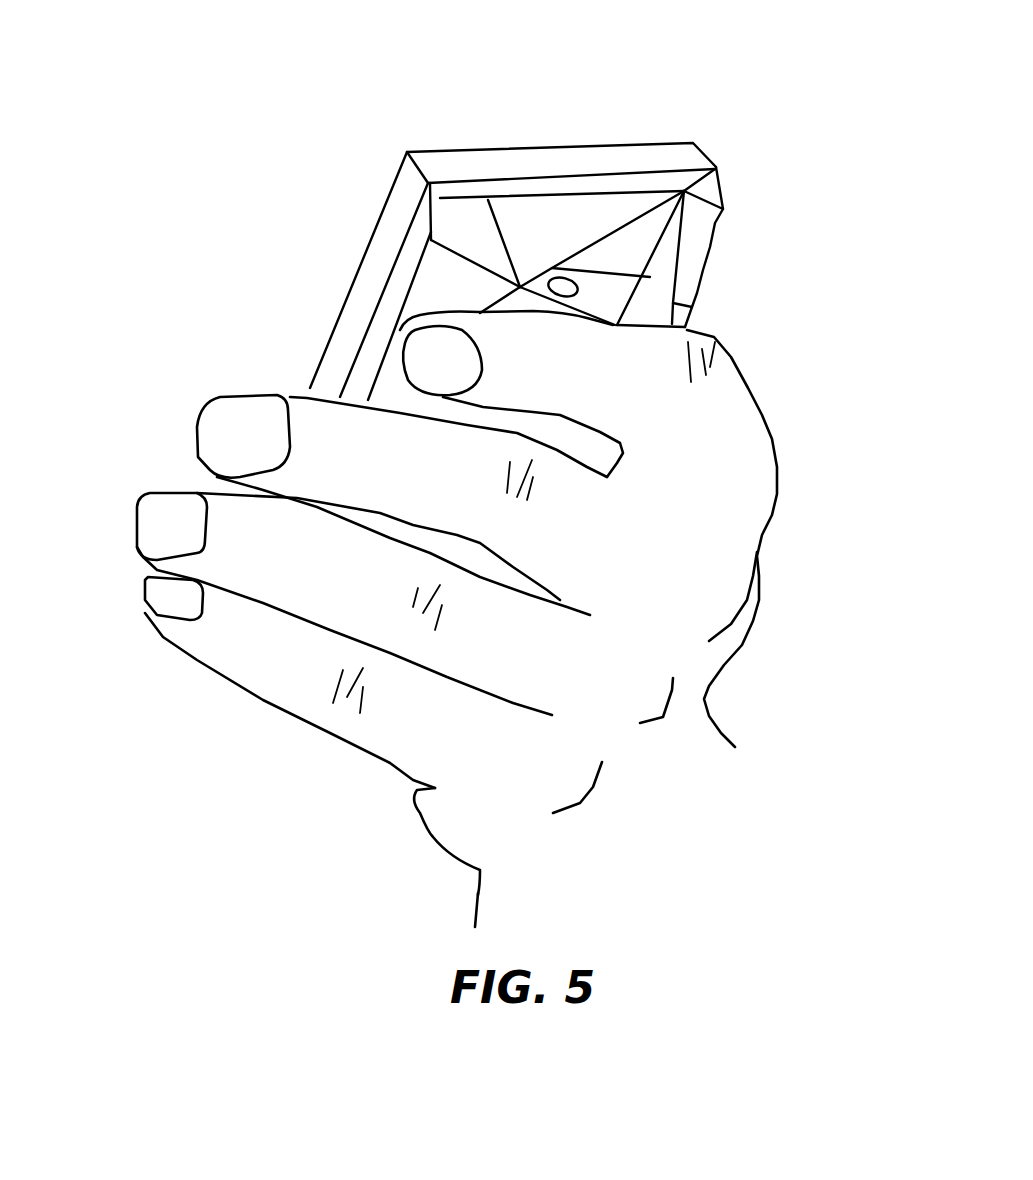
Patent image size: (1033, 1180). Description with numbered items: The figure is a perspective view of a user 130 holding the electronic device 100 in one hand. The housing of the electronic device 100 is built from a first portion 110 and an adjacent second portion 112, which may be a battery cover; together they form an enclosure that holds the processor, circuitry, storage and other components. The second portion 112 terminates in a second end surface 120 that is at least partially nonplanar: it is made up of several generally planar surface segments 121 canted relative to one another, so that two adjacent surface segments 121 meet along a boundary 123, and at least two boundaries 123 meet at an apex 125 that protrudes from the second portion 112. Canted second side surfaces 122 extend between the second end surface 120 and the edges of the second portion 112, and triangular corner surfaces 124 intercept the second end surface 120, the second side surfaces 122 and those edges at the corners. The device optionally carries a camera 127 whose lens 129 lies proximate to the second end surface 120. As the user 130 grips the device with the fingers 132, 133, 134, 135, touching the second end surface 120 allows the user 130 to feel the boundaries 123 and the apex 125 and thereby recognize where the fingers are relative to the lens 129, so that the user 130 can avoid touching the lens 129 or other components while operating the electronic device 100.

The electronic device 100 is at (766, 90).
The first portion 110 is at (360, 217).
The second portion 112 is at (717, 272).
The second end surface 120 is at (580, 208).
The surface segments 121 is at (541, 278).
The second side surfaces 122 is at (510, 191).
The boundary 123 is at (692, 307).
The corner surface 124 is at (448, 203).
The apex 125 is at (520, 287).
The camera 127 is at (592, 272).
The lens 129 is at (578, 289).
The user 130 is at (772, 676).
The thumb 132 is at (483, 377).
The index finger 133 is at (196, 437).
The middle finger 134 is at (138, 528).
The ring finger 135 is at (144, 596).